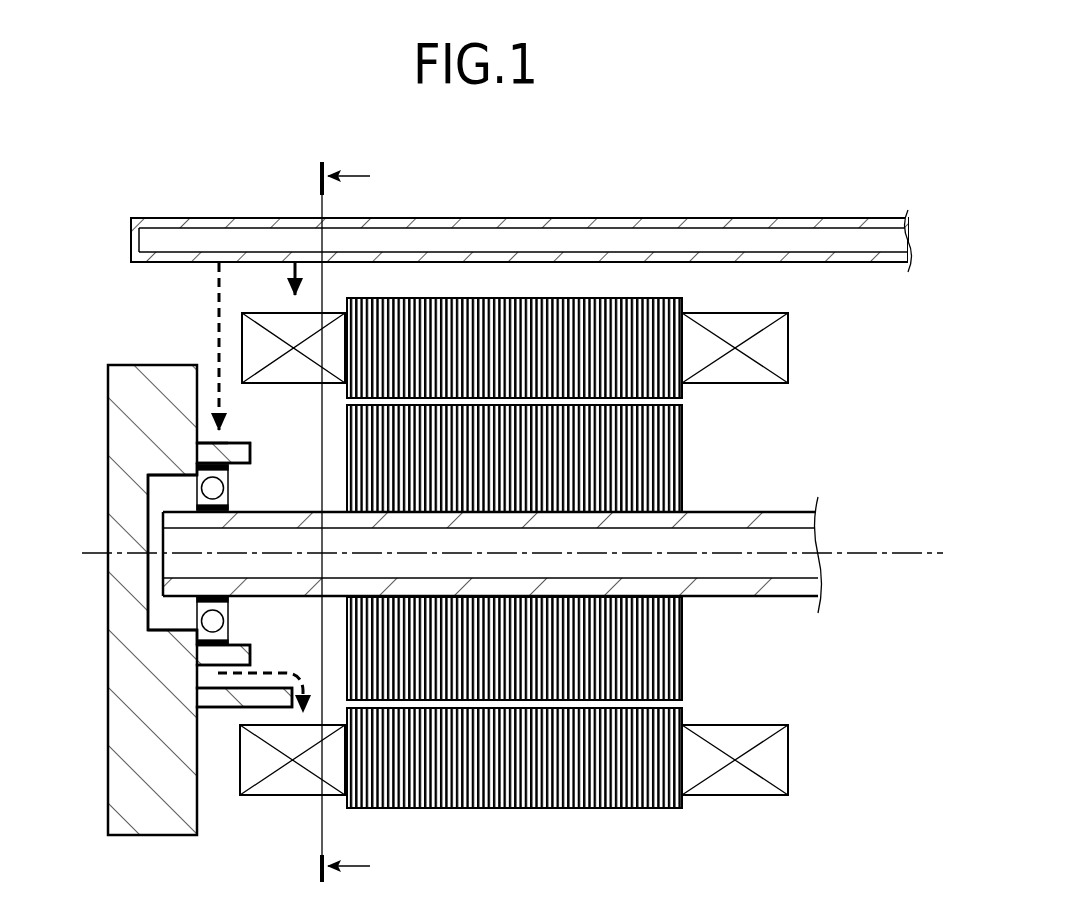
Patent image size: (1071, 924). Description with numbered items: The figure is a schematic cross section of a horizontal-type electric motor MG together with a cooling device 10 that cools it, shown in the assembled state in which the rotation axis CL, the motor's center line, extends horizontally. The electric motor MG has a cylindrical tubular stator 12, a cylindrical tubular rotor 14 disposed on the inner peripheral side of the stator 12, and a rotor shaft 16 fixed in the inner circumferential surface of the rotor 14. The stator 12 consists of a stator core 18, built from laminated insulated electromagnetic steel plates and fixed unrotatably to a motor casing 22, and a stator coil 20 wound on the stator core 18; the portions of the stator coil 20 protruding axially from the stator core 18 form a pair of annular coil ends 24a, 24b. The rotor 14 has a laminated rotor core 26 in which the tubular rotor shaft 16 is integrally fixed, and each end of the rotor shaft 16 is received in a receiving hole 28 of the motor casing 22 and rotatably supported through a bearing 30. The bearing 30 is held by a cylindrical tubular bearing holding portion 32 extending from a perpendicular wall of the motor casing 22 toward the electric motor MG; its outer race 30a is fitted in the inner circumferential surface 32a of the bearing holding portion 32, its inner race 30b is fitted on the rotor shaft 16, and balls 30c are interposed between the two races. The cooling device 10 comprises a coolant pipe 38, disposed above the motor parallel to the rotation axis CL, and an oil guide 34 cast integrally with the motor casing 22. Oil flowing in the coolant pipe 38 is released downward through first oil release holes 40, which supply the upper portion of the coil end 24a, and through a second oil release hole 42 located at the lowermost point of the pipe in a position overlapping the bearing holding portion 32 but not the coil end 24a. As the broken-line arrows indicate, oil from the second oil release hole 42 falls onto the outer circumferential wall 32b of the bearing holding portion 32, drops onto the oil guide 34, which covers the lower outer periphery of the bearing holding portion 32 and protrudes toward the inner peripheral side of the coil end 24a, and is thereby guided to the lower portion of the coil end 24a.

The cooling device 10 is at (162, 180).
The stator 12 is at (509, 281).
The rotor 14 is at (700, 637).
The rotor shaft 16 is at (739, 499).
The stator core 18 is at (598, 305).
The stator coil 20 is at (812, 352).
The motor casing 22 is at (148, 808).
The coil end 24a is at (286, 785).
The coil end 24b is at (738, 795).
The rotor core 26 is at (660, 437).
The receiving hole 28 is at (211, 626).
The bearing 30 is at (190, 490).
The outer race 30a is at (206, 470).
The inner race 30b is at (213, 509).
The balls 30c is at (197, 653).
The bearing holding portion 32 is at (228, 453).
The inner circumferential surface 32a is at (243, 466).
The outer circumferential wall 32b is at (205, 440).
The oil guide 34 is at (237, 698).
The coolant pipe 38 is at (599, 210).
The first oil release holes 40 is at (293, 262).
The second oil release hole 42 is at (219, 262).
The electric motor MG is at (700, 284).
The rotation axis CL is at (900, 556).